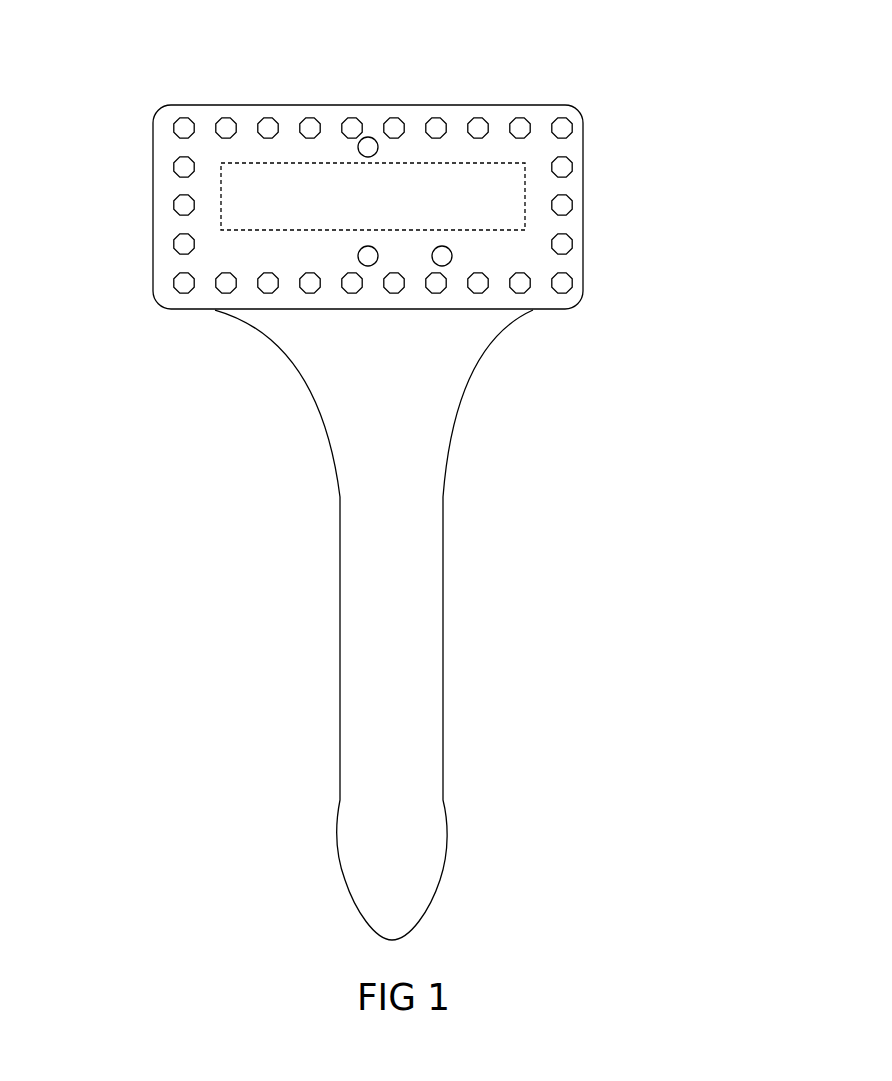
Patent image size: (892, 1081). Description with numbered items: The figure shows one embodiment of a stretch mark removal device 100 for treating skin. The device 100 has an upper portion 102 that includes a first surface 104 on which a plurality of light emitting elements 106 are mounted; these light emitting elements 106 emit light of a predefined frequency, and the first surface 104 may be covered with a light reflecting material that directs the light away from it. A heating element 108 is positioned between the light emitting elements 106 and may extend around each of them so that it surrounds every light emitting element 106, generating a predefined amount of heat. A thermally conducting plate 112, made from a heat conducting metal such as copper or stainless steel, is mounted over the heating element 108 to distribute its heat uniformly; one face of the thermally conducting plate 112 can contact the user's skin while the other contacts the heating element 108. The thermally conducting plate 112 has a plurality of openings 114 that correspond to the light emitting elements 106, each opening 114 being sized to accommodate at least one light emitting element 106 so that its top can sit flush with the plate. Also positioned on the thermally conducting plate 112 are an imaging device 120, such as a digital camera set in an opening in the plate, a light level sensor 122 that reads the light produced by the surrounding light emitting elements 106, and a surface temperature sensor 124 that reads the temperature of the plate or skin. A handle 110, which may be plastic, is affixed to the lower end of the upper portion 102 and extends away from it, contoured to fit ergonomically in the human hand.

The stretch mark removal device 100 is at (372, 476).
The upper portion 102 is at (151, 146).
The first surface 104 is at (166, 188).
The light emitting element 106 is at (173, 242).
The heating element 108 is at (524, 189).
The handle 110 is at (403, 603).
The thermally conducting plate 112 is at (224, 298).
The opening 114 is at (181, 291).
The imaging device 120 is at (367, 136).
The light level sensor 122 is at (369, 268).
The surface temperature sensor 124 is at (443, 268).